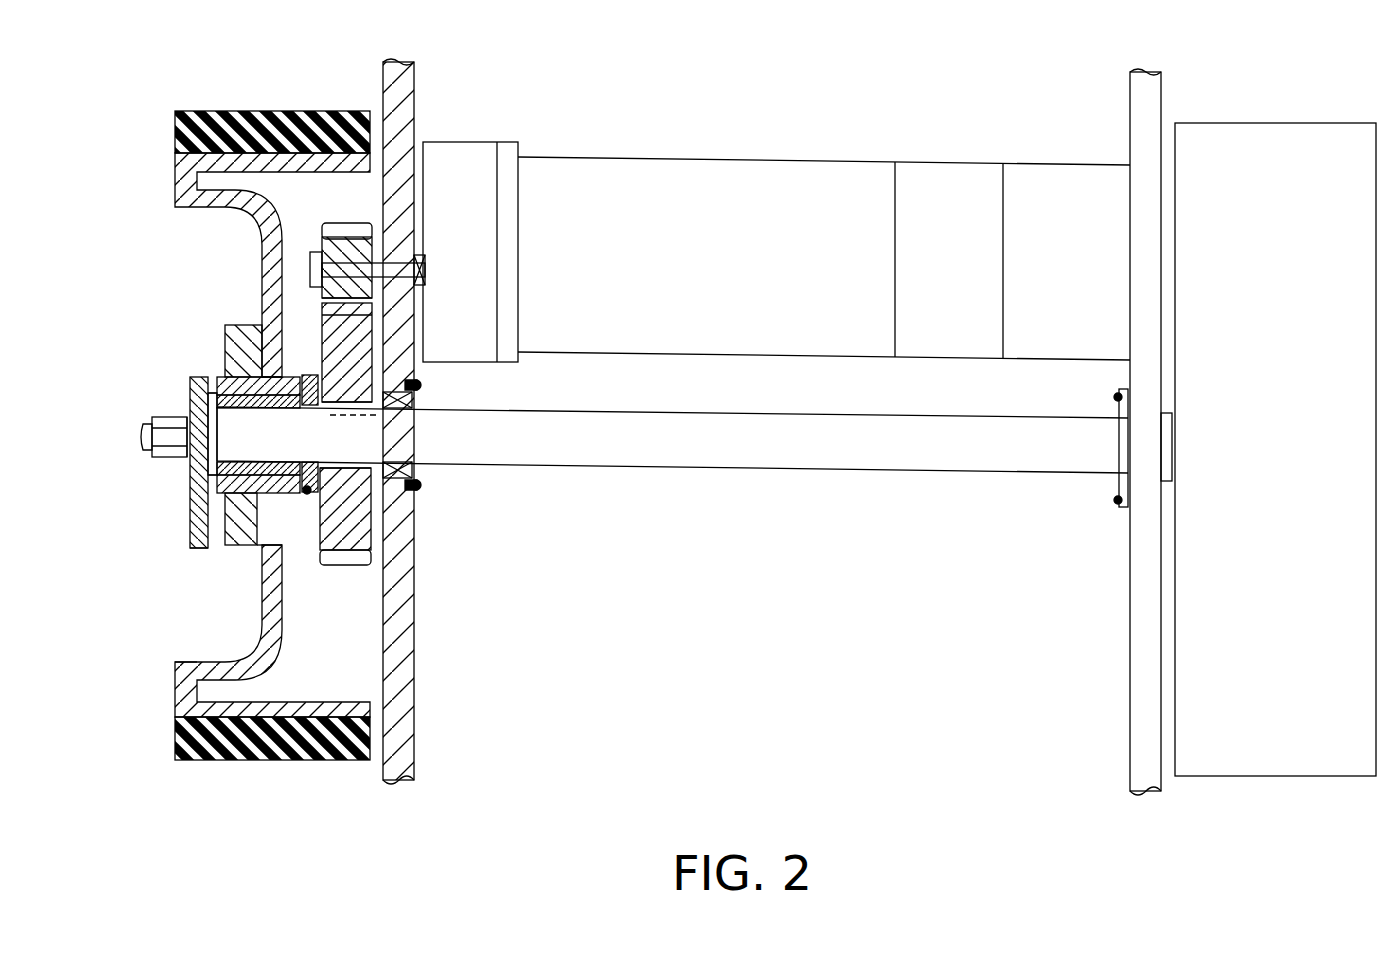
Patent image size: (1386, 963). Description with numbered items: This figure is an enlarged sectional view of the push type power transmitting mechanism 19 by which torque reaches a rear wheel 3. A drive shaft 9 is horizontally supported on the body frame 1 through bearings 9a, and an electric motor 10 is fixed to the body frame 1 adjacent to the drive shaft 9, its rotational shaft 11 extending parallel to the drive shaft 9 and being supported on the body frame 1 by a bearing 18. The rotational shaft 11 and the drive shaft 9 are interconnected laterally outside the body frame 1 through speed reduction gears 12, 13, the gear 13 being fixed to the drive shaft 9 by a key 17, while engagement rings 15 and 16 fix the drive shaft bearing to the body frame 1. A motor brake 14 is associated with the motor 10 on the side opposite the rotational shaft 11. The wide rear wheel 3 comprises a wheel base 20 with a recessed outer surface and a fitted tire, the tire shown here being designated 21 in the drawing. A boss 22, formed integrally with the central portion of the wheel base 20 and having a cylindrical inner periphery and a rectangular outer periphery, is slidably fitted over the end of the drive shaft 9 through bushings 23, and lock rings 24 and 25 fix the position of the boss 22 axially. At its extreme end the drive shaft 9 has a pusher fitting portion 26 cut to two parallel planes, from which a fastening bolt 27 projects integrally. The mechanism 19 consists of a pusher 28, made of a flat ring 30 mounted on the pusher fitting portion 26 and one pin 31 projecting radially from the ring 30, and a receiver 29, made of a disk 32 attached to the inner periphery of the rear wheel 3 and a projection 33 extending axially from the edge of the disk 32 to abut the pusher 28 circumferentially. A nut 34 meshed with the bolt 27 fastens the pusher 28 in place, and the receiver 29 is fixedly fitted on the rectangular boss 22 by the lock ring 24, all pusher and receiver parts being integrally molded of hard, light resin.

The body frame 1 is at (416, 98).
The wheel 3 is at (186, 108).
The drive shaft 9 is at (724, 464).
The bearing 9a is at (400, 462).
The electric motor 10 is at (766, 158).
The rotational shaft 11 is at (262, 245).
The speed reduction gear 12 is at (330, 330).
The speed reduction gear 13 is at (322, 305).
The motor brake 14 is at (1058, 164).
The engagement ring 15 is at (423, 493).
The engagement ring 16 is at (410, 498).
The key 17 is at (392, 427).
The bearing 18 is at (340, 268).
The push type power transmitting mechanism 19 is at (206, 340).
The wheel base 20 is at (322, 258).
The tire 21 is at (285, 111).
The boss 22 is at (232, 372).
The bushing 23 is at (222, 390).
The lock ring 24 is at (187, 503).
The lock ring 25 is at (310, 492).
The pusher fitting portion 26 is at (158, 425).
The fastening bolt 27 is at (150, 440).
The pusher 28 is at (190, 503).
The receiver 29 is at (227, 568).
The ring 30 is at (195, 525).
The pin 31 is at (205, 550).
The disk 32 is at (246, 557).
The projection 33 is at (212, 550).
The nut 34 is at (205, 430).